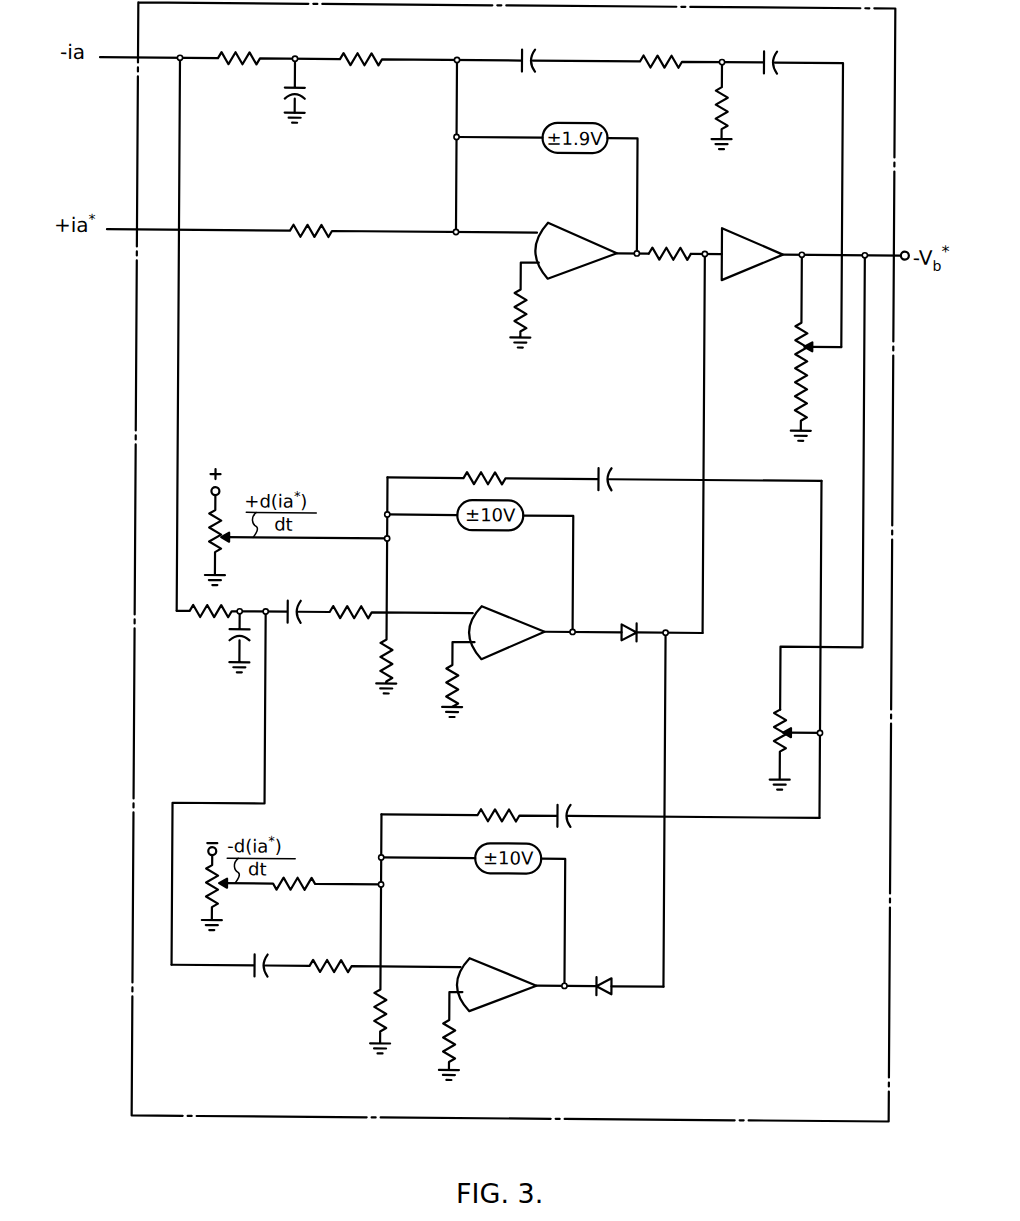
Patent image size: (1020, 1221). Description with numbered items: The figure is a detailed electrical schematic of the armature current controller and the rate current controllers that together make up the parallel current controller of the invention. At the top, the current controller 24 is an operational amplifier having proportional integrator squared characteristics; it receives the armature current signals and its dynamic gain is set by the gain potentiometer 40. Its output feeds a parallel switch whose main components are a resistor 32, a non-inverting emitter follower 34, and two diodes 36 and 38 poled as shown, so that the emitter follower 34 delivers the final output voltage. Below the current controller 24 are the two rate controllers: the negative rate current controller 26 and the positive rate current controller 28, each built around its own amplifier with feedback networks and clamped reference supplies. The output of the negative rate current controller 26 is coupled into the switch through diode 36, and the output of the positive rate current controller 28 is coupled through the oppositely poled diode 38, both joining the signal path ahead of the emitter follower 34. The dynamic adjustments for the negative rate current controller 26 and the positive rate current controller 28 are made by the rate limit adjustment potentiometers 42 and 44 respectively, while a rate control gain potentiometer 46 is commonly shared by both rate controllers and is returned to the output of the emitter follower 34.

The current controller 24 is at (585, 321).
The (−) rate current controller 26 is at (560, 675).
The (+) rate current controller 28 is at (716, 998).
The resistor 32 is at (668, 241).
The non-inverting emitter follower 34 is at (753, 239).
The diode 36 is at (628, 626).
The diode 38 is at (604, 988).
The gain potentiometer 40 is at (796, 340).
The rate limit adjustment potentiometer 42 is at (212, 536).
The rate limit adjustment potentiometer 44 is at (212, 880).
The rate control gain potentiometer 46 is at (778, 718).